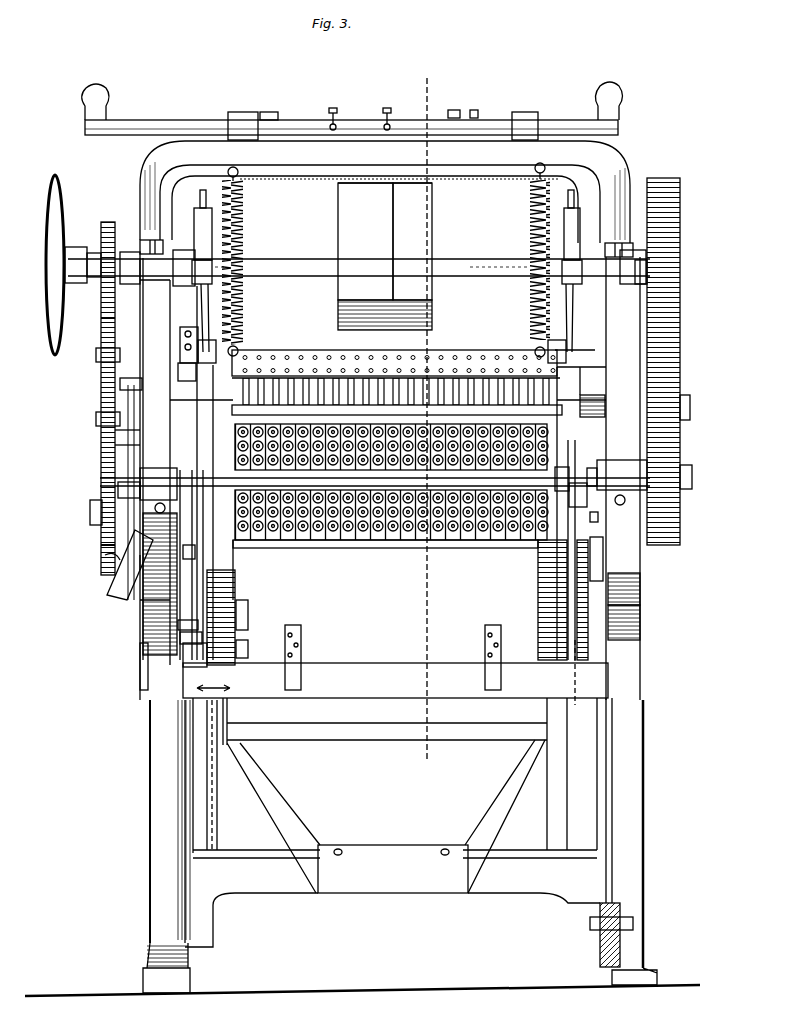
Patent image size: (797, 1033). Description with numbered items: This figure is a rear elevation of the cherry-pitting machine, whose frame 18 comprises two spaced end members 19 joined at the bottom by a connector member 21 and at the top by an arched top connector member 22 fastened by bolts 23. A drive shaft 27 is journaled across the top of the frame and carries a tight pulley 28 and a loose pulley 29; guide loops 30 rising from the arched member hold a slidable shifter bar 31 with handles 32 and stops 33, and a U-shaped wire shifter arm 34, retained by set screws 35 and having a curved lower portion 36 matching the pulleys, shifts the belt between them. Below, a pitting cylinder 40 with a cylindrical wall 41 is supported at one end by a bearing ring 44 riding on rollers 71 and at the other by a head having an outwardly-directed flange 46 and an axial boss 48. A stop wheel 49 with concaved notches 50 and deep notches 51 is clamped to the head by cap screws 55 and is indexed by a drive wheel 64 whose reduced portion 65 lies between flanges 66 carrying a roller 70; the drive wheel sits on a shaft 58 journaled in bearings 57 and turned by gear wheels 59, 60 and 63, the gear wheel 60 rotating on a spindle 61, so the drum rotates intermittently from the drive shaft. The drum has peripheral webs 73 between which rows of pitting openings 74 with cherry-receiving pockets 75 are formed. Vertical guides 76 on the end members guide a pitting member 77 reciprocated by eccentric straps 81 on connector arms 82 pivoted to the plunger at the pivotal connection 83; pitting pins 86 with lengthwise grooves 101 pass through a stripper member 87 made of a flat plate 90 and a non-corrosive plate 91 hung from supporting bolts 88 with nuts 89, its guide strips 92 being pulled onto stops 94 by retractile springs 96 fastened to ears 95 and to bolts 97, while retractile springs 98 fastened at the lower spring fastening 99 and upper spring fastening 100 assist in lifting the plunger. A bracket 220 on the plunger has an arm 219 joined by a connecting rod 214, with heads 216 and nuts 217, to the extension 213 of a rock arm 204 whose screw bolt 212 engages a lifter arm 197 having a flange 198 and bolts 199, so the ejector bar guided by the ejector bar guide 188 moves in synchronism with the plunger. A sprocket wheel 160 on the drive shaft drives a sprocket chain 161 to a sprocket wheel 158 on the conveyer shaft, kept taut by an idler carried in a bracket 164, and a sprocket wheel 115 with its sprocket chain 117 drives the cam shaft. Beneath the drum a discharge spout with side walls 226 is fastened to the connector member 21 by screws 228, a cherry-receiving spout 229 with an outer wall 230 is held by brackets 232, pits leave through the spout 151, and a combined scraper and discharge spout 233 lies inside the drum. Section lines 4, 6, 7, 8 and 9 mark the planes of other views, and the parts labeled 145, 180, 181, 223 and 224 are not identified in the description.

The section line 4 is at (418, 77).
The section line 6 is at (219, 192).
The side plate 7 is at (140, 345).
The section line 8 is at (168, 420).
The section line 9 is at (575, 412).
The frame 18 is at (143, 615).
The end members 19 is at (150, 736).
The connector member 21 is at (402, 640).
The arched top connector member 22 is at (485, 165).
The bolts 23 is at (142, 243).
The drive shaft 27 is at (290, 276).
The tight pulley 28 is at (420, 228).
The loose pulley 29 is at (340, 231).
The guide loops 30 is at (243, 112).
The shifter bar 31 is at (190, 120).
The handles 32 is at (106, 93).
The stops 33 is at (270, 112).
The shifter arm 34 is at (338, 186).
The set screws 35 is at (333, 108).
The curved lower portion 36 is at (340, 300).
The pitting cylinder 40 is at (556, 662).
The cylindrical wall 41 is at (540, 545).
The bearing ring 44 is at (236, 594).
The outwardly-directed flange 46 is at (540, 560).
The boss 48 is at (603, 545).
The stop wheel 49 is at (585, 648).
The concaved notches 50 is at (620, 612).
The deep notches 51 is at (620, 630).
The cap screws 55 is at (600, 518).
The bearings 57 is at (668, 452).
The shaft 58 is at (340, 545).
The gear wheel 59 is at (668, 520).
The gear wheel 60 is at (668, 360).
The spindle 61 is at (683, 408).
The gear wheel 63 is at (668, 280).
The drive wheel 64 is at (568, 512).
The reduced portion 65 is at (560, 468).
The flanges 66 is at (570, 495).
The roller 70 is at (640, 462).
The rollers 71 is at (236, 650).
The peripheral webs 73 is at (300, 550).
The pitting openings 74 is at (255, 550).
The cherry-receiving pockets 75 is at (215, 515).
The vertical guides 76 is at (595, 378).
The pitting member 77 is at (462, 352).
The eccentric straps 81 is at (195, 224).
The connector arms 82 is at (200, 310).
The pivotal connection 83 is at (218, 344).
The pitting pins 86 is at (310, 372).
The stripper member 87 is at (375, 372).
The supporting bolts 88 is at (235, 396).
The nuts 89 is at (242, 352).
The flat plate 90 is at (340, 372).
The non-corrosive plate 91 is at (430, 372).
The guide strips 92 is at (560, 420).
The stops 94 is at (640, 384).
The ears 95 is at (102, 436).
The retractile springs 96 is at (110, 452).
The bolts 97 is at (215, 495).
The retractile springs 98 is at (244, 224).
The lower spring fastening 99 is at (285, 358).
The upper spring fastening 100 is at (240, 170).
The grooves 101 is at (470, 410).
The sprocket wheel 115 is at (120, 383).
The sprocket chain 117 is at (100, 420).
The block 145 is at (185, 553).
The spout 151 is at (110, 584).
The sprocket wheel 158 is at (110, 560).
The sprocket wheel 160 is at (108, 222).
The sprocket chain 161 is at (100, 328).
The bracket 164 is at (100, 355).
The hub 180 is at (135, 474).
The hub 181 is at (125, 490).
The ejector bar guide 188 is at (180, 648).
The lifter arms 197 is at (236, 622).
The flange 198 is at (185, 672).
The bolts 199 is at (236, 634).
The rock arm 204 is at (178, 625).
The screw bolt 212 is at (178, 590).
The extension 213 is at (145, 560).
The connecting rod 214 is at (110, 545).
The heads 216 is at (128, 393).
The nuts 217 is at (125, 405).
The arm 219 is at (178, 352).
The bracket 220 is at (182, 335).
The bracket 223 is at (470, 892).
The hopper bottom 224 is at (392, 896).
The side walls 226 is at (262, 820).
The screws 228 is at (340, 848).
The cherry-receiving spout 229 is at (345, 675).
The outer wall 230 is at (462, 668).
The brackets 232 is at (300, 660).
The combined scraper and discharge spout 233 is at (140, 680).